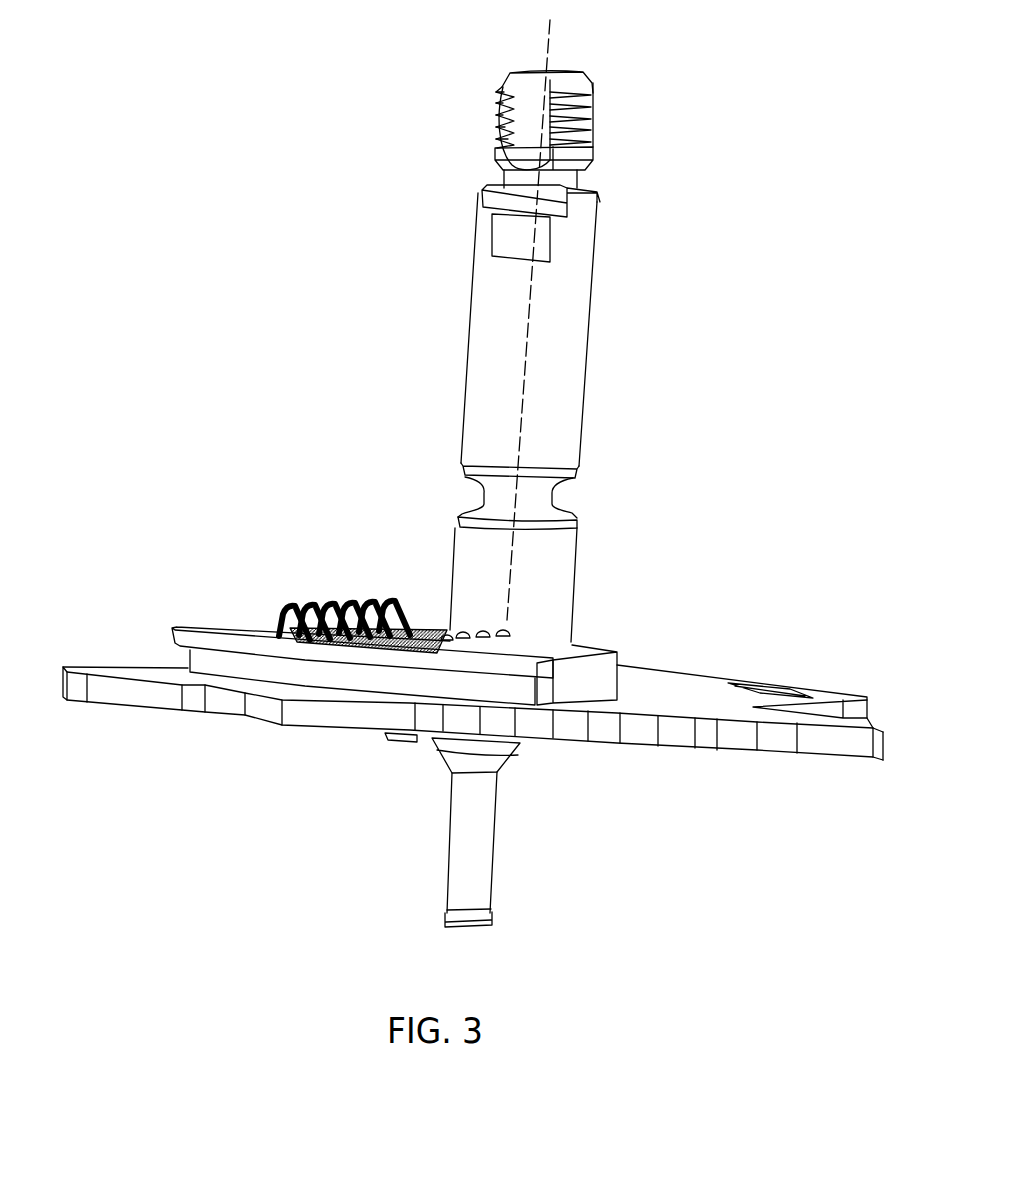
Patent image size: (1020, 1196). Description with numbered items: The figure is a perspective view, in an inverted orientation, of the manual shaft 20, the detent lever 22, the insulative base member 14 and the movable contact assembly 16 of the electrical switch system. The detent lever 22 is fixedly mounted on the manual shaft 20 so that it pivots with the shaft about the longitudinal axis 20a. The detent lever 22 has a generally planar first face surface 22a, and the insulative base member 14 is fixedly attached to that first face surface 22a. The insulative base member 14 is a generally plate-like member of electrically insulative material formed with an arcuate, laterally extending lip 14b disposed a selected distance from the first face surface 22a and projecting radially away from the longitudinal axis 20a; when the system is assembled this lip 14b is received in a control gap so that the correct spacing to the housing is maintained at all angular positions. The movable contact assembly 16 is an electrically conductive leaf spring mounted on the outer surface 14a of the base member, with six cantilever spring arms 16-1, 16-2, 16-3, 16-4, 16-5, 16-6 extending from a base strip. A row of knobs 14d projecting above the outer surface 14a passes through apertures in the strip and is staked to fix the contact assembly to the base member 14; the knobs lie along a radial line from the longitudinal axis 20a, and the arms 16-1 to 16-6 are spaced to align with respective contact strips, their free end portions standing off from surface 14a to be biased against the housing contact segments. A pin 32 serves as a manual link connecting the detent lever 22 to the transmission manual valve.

The insulative base member 14 is at (187, 612).
The outer surface 14a is at (541, 652).
The lip 14b is at (327, 655).
The knobs 14d is at (497, 628).
The movable contact assembly 16 is at (338, 581).
The cantilever spring arm 16-1 is at (391, 602).
The cantilever spring arm 16-2 is at (364, 604).
The cantilever spring arm 16-3 is at (350, 605).
The cantilever spring arm 16-4 is at (324, 605).
The cantilever spring arm 16-5 is at (302, 605).
The cantilever spring arm 16-6 is at (282, 607).
The manual shaft 20 is at (588, 322).
The longitudinal axis 20a is at (552, 38).
The detent lever 22 is at (680, 672).
The first face surface 22a is at (672, 702).
The pin 32 is at (493, 862).